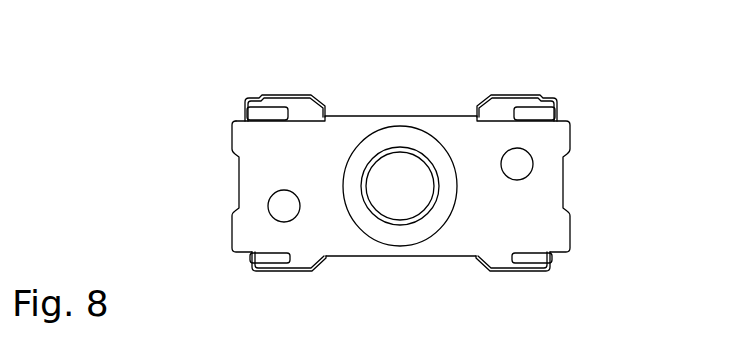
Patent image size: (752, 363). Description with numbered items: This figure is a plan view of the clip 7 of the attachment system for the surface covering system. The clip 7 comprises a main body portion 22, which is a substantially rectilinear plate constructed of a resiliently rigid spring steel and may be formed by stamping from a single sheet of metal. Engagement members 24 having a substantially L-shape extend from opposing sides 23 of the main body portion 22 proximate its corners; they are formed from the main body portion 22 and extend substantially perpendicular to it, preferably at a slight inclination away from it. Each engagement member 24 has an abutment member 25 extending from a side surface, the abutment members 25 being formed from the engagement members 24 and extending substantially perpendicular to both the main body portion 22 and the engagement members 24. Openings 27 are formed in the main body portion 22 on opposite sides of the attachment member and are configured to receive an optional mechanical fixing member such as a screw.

The clip 7 is at (126, 136).
The main body portion 22 is at (250, 146).
The opposing sides 23 is at (395, 113).
The engagement members 24 is at (303, 95).
The abutment members 25 is at (248, 105).
The openings 27 is at (283, 206).